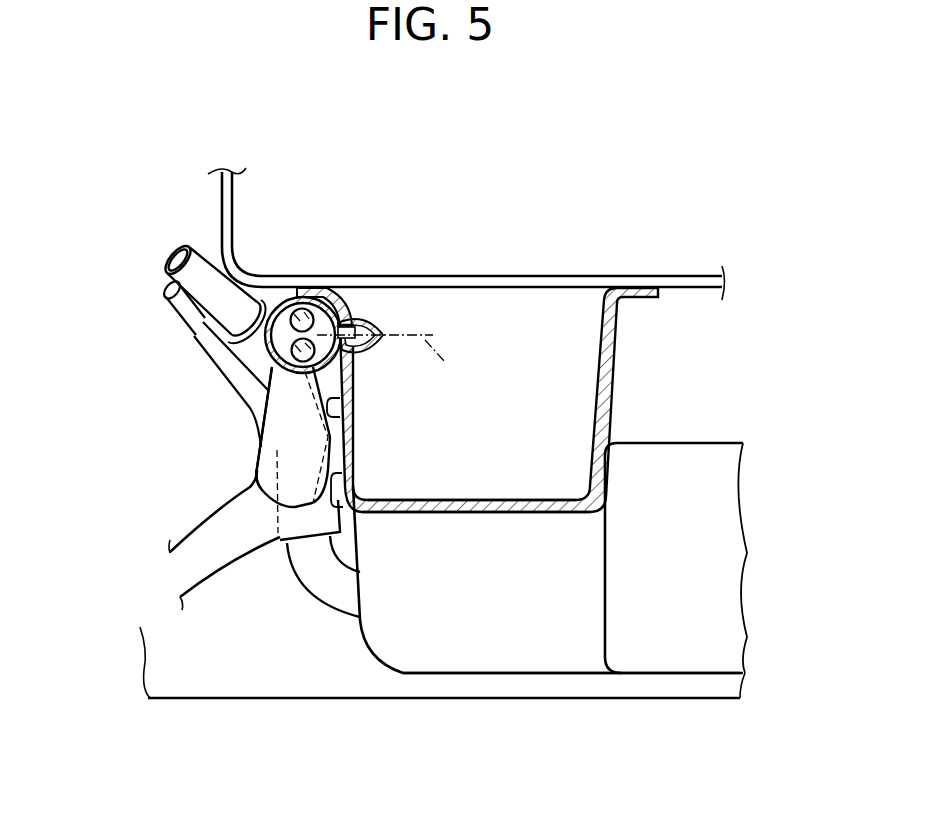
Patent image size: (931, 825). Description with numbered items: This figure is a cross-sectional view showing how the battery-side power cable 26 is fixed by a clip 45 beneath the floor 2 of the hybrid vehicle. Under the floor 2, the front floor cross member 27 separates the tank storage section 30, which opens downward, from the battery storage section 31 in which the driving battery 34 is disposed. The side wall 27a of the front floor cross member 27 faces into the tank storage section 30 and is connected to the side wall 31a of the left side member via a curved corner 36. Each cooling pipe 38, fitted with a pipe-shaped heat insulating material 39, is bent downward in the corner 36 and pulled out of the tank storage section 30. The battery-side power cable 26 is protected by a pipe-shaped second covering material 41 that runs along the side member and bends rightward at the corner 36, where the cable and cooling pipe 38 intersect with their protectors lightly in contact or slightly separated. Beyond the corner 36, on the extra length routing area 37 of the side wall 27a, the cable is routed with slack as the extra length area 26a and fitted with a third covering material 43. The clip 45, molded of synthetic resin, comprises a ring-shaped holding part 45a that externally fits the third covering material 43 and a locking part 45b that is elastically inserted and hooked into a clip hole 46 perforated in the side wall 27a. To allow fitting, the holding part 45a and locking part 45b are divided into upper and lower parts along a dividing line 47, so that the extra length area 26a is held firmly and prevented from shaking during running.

The floor 2 is at (663, 276).
The battery-side power cable 26 is at (292, 347).
The extra length area 26a is at (268, 392).
The front floor cross member 27 is at (500, 512).
The side wall of the front floor cross member 27a is at (337, 501).
The tank storage section 30 is at (172, 500).
The battery storage section 31 is at (657, 388).
The upper surface of floor 31a is at (273, 673).
The driving battery 34 is at (705, 523).
The corner 36 is at (335, 630).
The extra length routing area 37 is at (340, 402).
The cooling pipe 38 is at (213, 312).
The heat insulating material 39 is at (250, 380).
The second covering material 41 is at (220, 577).
The third covering material 43 is at (318, 443).
The clip 45 is at (405, 158).
The holding part 45a is at (325, 288).
The locking part 45b is at (370, 307).
The clip hole 46 is at (352, 318).
The dividing line 47 is at (391, 365).